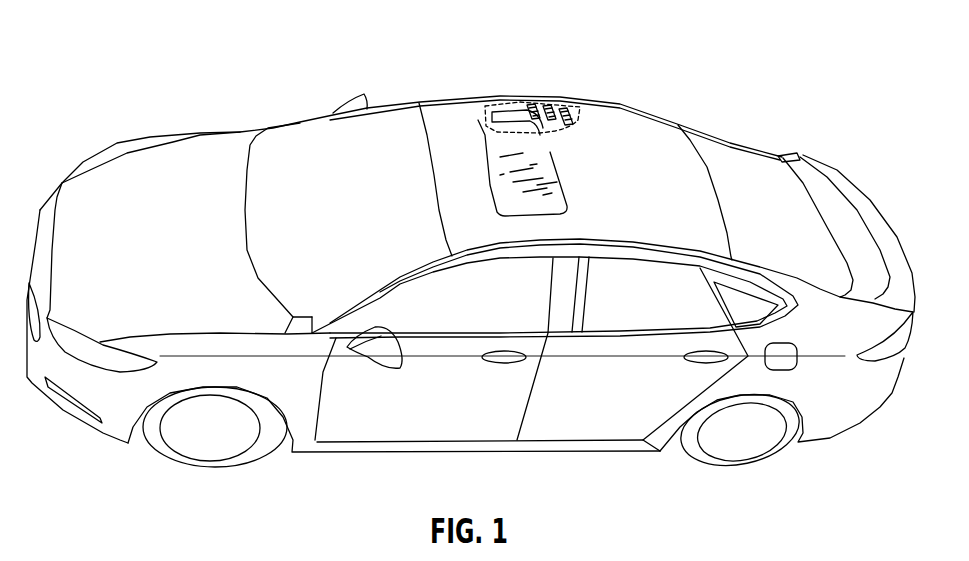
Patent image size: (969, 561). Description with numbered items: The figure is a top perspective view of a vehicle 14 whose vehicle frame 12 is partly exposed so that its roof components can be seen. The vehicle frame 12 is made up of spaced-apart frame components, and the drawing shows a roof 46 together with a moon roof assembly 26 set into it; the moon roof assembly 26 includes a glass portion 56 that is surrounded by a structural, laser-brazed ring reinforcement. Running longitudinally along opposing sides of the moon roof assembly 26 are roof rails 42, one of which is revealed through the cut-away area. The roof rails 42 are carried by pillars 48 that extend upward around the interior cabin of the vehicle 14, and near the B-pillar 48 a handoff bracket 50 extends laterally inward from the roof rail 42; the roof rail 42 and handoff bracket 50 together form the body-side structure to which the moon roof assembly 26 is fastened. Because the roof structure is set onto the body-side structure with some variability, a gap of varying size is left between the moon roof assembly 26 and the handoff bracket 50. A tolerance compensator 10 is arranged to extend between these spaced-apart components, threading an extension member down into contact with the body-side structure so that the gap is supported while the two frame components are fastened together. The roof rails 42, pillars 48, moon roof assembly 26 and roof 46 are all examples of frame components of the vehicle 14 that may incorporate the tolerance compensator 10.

The tolerance compensator 10 is at (544, 88).
The vehicle frame 12 is at (598, 106).
The vehicle 14 is at (112, 103).
The moon roof assembly 26 is at (478, 116).
The roof rail 42 is at (516, 96).
The roof 46 is at (645, 153).
The pillar 48 is at (372, 290).
The handoff bracket 50 is at (563, 88).
The glass portion 56 is at (497, 167).